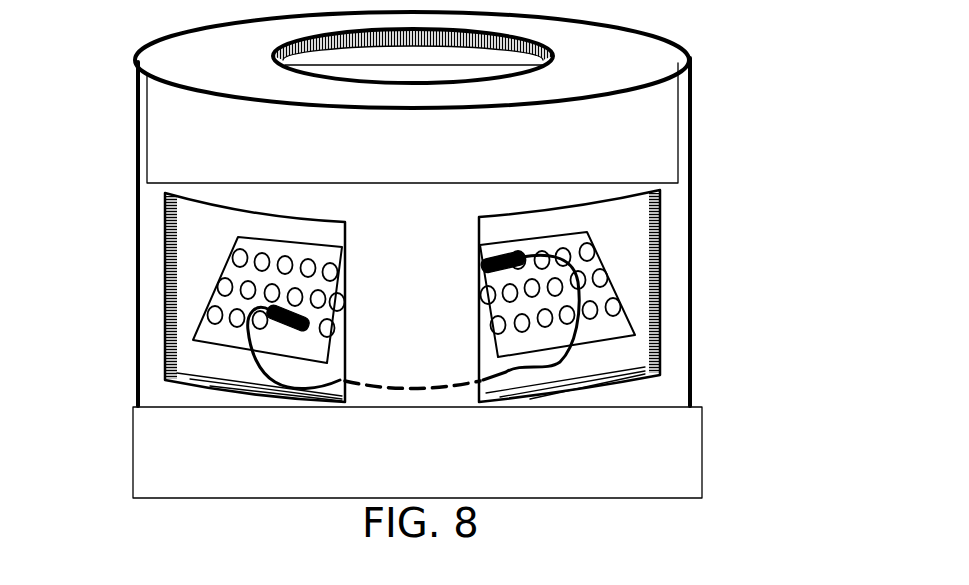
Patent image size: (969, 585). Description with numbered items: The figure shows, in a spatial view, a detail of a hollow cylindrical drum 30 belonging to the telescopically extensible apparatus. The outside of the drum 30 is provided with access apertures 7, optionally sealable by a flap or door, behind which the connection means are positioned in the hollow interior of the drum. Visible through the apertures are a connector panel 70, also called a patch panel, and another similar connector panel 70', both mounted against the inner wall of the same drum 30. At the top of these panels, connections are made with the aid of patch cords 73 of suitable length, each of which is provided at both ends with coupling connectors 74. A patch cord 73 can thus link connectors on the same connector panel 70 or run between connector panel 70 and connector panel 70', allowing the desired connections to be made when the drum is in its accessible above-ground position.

The drum 30 is at (696, 96).
The access apertures 7 is at (200, 222).
The connector panel 70 is at (189, 300).
The connector panel 70' is at (646, 294).
The coupling connectors 74 is at (302, 312).
The patch cords 73 is at (282, 383).